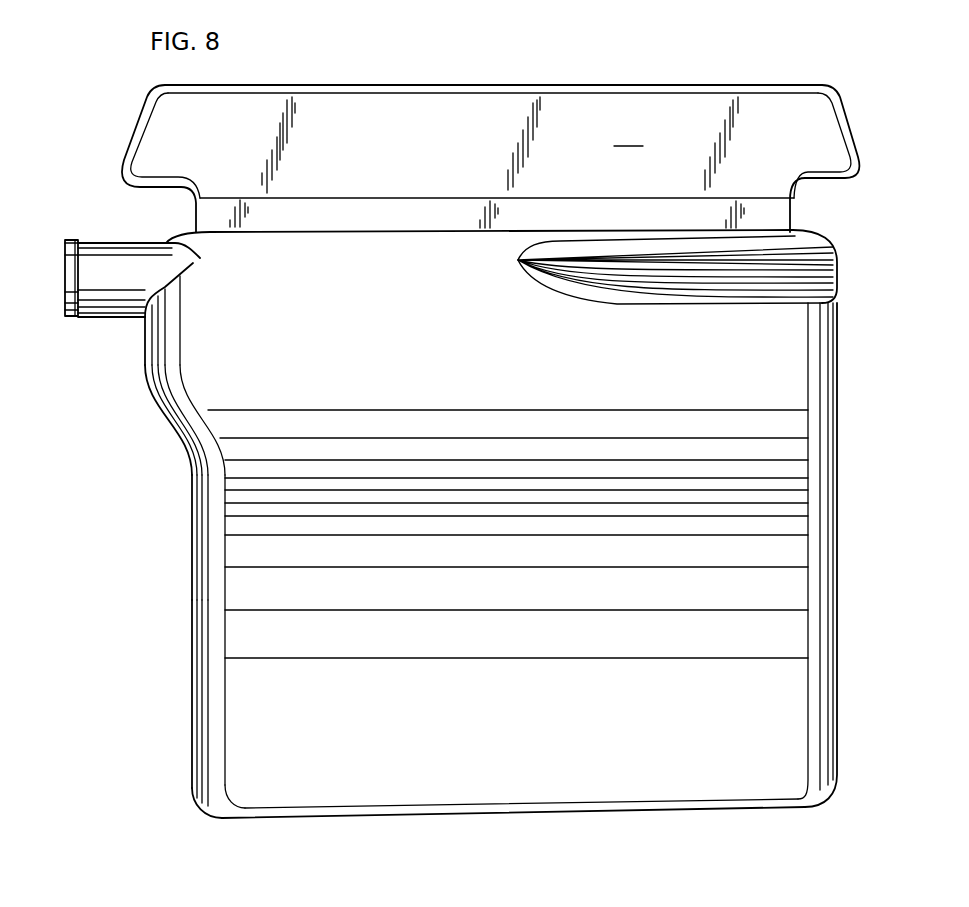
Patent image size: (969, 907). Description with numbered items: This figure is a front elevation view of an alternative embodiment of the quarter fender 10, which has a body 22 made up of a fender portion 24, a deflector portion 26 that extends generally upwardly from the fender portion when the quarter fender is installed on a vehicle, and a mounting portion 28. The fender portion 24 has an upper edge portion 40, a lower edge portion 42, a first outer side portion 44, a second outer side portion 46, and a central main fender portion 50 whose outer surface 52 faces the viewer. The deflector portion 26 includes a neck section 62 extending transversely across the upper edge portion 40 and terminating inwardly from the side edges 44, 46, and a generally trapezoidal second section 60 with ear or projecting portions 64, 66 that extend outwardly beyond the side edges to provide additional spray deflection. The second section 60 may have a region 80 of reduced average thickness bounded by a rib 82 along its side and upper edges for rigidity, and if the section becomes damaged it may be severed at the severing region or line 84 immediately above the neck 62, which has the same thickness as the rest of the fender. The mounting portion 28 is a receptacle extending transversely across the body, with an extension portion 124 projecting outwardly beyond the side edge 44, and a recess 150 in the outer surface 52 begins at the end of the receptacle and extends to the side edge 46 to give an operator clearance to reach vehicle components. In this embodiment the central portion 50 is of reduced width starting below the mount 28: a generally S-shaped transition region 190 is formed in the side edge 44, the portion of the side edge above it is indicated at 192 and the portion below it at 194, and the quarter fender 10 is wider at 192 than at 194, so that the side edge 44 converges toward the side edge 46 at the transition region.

The quarter fender 10 is at (238, 784).
The body 22 is at (362, 752).
The fender portion 24 is at (720, 641).
The deflector portion 26 is at (556, 132).
The mounting portion 28 is at (124, 320).
The upper edge portion 40 is at (796, 225).
The lower edge portion 42 is at (570, 815).
The first outer side portion 44 is at (192, 604).
The second outer side portion 46 is at (838, 567).
The central main fender portion 50 is at (412, 540).
The outer surface 52 is at (487, 786).
The second section 60 is at (442, 120).
The neck section 62 is at (318, 215).
The ear or projecting portion 64 is at (823, 107).
The ear or projecting portion 66 is at (153, 118).
The region of reduced average thickness 80 is at (493, 116).
The rib 82 is at (603, 88).
The severing region or line 84 is at (363, 198).
The extension portion 124 is at (96, 312).
The recess 150 is at (768, 262).
The transition region 190 is at (154, 413).
The side edge portion above transition region 192 is at (145, 352).
The side edge portion below transition region 194 is at (192, 525).